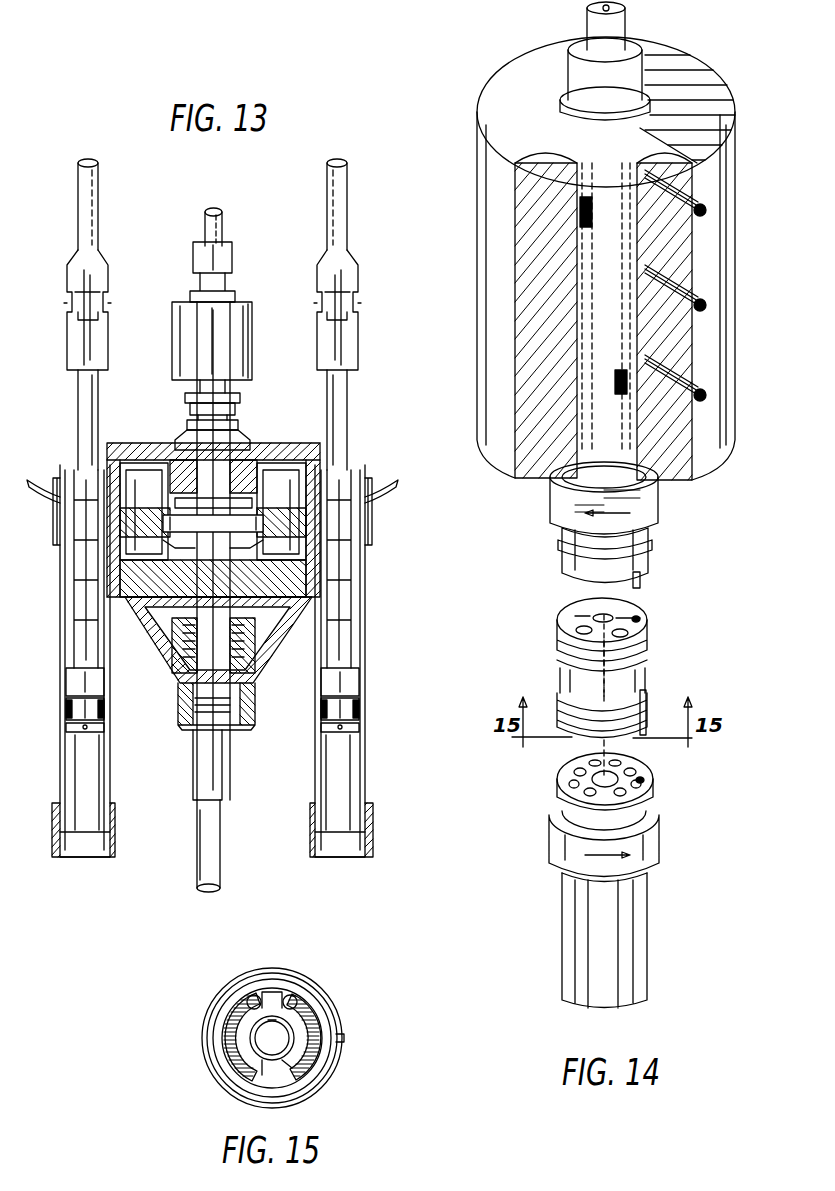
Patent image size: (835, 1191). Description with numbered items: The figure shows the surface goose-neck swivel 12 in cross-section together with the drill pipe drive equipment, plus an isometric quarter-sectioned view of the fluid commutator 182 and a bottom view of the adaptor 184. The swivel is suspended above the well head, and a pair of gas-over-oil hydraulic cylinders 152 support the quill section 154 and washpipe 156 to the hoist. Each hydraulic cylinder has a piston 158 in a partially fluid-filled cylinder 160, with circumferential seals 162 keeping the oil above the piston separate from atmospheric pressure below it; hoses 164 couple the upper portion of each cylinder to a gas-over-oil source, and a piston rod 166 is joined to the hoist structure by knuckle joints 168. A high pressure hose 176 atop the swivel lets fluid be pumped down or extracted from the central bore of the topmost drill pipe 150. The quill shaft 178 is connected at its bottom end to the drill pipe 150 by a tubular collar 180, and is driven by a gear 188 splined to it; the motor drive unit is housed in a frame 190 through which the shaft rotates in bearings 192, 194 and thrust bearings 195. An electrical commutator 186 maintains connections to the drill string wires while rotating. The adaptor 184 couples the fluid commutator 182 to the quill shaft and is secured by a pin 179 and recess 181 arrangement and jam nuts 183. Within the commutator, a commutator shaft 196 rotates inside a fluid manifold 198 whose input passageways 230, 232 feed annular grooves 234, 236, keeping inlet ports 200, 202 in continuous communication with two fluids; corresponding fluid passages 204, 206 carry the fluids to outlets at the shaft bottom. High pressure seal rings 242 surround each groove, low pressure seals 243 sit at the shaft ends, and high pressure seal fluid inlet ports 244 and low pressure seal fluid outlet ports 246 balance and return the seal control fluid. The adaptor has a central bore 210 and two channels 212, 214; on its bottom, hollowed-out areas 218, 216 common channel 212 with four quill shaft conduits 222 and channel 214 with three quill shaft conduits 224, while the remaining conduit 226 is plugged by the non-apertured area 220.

In FIG. 13, the goose-neck swivel 12 is at (152, 265).
In FIG. 13, the drill pipe 150 is at (222, 836).
In FIG. 13, the hydraulic cylinders 152 is at (368, 590).
In FIG. 13, the quill section 154 is at (382, 566).
In FIG. 13, the washpipe 156 is at (245, 268).
In FIG. 13, the piston 158 is at (66, 686).
In FIG. 13, the cylinder 160 is at (60, 770).
In FIG. 13, the circumferential seals 162 is at (66, 710).
In FIG. 13, the hoses 164 is at (40, 487).
In FIG. 13, the piston rod 166 is at (78, 410).
In FIG. 13, the knuckle joints 168 is at (67, 275).
In FIG. 13, the high pressure hose 176 is at (220, 206).
In FIG. 13, the quill shaft 178 is at (180, 455).
In FIG. 14, the quill shaft 178 is at (647, 920).
In FIG. 14, the pin 179 is at (645, 580).
In FIG. 15, the pin 179 is at (340, 1038).
In FIG. 13, the tubular collar 180 is at (228, 786).
In FIG. 14, the recess 181 is at (632, 618).
In FIG. 13, the fluid commutator 182 is at (252, 346).
In FIG. 14, the fluid commutator 182 is at (712, 42).
In FIG. 13, the jam nuts 183 is at (192, 400).
In FIG. 14, the jam nuts 183 is at (560, 515).
In FIG. 13, the adaptor 184 is at (238, 402).
In FIG. 14, the adaptor 184 is at (553, 603).
In FIG. 15, the adaptor 184 is at (190, 1043).
In FIG. 13, the electrical commutator 186 is at (250, 712).
In FIG. 13, the gear 188 is at (245, 512).
In FIG. 13, the frame 190 is at (305, 620).
In FIG. 13, the bearings 192 is at (180, 683).
In FIG. 13, the bearings 194 is at (250, 446).
In FIG. 13, the thrust bearings 195 is at (170, 575).
In FIG. 14, the commutator shaft 196 is at (555, 492).
In FIG. 14, the fluid manifold 198 is at (478, 112).
In FIG. 14, the inlet port 200 is at (588, 200).
In FIG. 14, the inlet port 202 is at (616, 372).
In FIG. 14, the fluid passage 204 is at (592, 285).
In FIG. 14, the fluid passage 206 is at (615, 455).
In FIG. 14, the central bore 210 is at (580, 612).
In FIG. 14, the channel 212 is at (580, 627).
In FIG. 15, the channel 212 is at (255, 975).
In FIG. 14, the channel 214 is at (625, 635).
In FIG. 15, the channel 214 is at (292, 975).
In FIG. 15, the hollowed-out area 216 is at (318, 1010).
In FIG. 15, the hollowed-out area 218 is at (215, 1005).
In FIG. 15, the non-apertured area 220 is at (315, 1072).
In FIG. 14, the quill shaft conduits 222 is at (650, 805).
In FIG. 14, the quill shaft conduits 224 is at (565, 770).
In FIG. 14, the conduit 226 is at (640, 765).
In FIG. 14, the input passageway 230 is at (700, 245).
In FIG. 14, the input passageway 232 is at (700, 410).
In FIG. 14, the annular groove 234 is at (690, 202).
In FIG. 14, the annular groove 236 is at (660, 470).
In FIG. 14, the high pressure seal rings 242 is at (577, 228).
In FIG. 14, the low pressure seals 243 is at (560, 182).
In FIG. 14, the high pressure seal fluid inlet ports 244 is at (700, 218).
In FIG. 14, the low pressure seal fluid outlet ports 246 is at (700, 330).